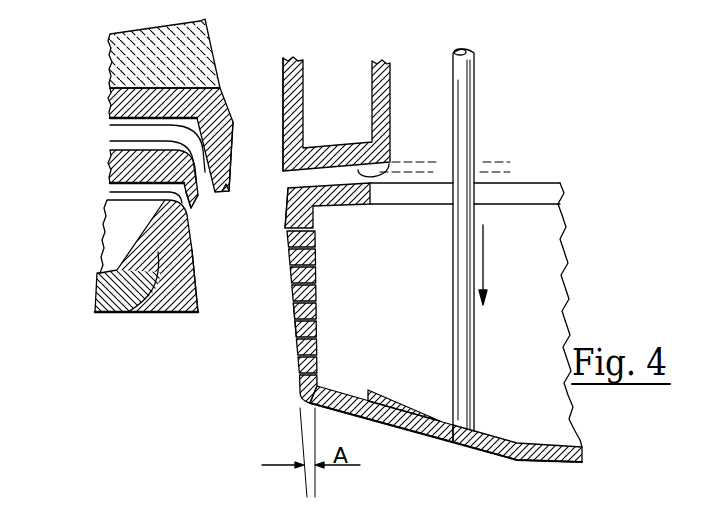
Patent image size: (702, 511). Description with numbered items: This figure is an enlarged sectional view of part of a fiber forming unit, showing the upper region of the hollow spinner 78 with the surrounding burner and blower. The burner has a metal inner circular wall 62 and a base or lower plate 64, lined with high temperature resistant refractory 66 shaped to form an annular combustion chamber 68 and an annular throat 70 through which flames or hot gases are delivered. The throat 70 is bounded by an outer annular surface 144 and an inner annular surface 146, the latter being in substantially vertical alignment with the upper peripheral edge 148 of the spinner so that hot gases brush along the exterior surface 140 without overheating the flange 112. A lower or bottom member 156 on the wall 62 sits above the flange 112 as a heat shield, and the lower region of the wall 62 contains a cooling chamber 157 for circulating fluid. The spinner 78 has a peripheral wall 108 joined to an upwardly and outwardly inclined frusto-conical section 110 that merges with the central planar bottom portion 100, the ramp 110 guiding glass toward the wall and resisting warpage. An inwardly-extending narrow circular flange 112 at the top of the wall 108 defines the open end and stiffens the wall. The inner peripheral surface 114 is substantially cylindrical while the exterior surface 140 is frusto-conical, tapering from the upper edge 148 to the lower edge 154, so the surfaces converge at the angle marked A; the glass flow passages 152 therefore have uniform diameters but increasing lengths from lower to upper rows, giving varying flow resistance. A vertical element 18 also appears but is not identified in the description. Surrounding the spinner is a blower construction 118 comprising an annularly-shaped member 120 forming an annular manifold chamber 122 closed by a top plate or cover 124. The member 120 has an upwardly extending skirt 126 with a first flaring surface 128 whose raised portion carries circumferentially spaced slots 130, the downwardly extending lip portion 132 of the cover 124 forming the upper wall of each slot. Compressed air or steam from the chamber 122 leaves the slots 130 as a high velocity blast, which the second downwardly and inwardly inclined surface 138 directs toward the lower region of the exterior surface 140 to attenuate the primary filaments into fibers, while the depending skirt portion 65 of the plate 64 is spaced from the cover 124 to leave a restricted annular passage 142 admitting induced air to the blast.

The tube 18 is at (475, 105).
The inner circular wall 62 is at (391, 87).
The base or lower plate 64 is at (120, 97).
The depending skirt portion 65 is at (221, 193).
The high temperature resistant refractory 66 is at (130, 45).
The annular confined combustion zone or chamber 68 is at (255, 76).
The annular throat or discharge passage 70 is at (265, 172).
The hollow spinner, rotor or centrifuge 78 is at (446, 442).
The central planar bottom portion 100 is at (561, 443).
The peripheral wall 108 is at (297, 329).
The frusto-conical inclined section or annular ramp portion 110 is at (353, 395).
The inwardly-extending narrow circular flange 112 is at (357, 206).
The inner peripheral surface 114 is at (322, 308).
The blower construction 118 is at (93, 277).
The annularly-shaped member 120 is at (99, 295).
The annular manifold or chamber 122 is at (136, 229).
The top plate or cover 124 is at (115, 167).
The upwardly extending circular wall or skirt portion 126 is at (127, 313).
The first upwardly and outwardly flaring frusto-conical surface 128 is at (196, 210).
The circumferentially spaced slots or orifices 130 is at (110, 192).
The downwardly extending circular lip portion 132 is at (110, 141).
The second downwardly and inwardly inclined frusto-conical surface 138 is at (200, 295).
The exterior peripheral surface 140 is at (289, 308).
The restricted annular passage 142 is at (115, 124).
The outer annular surface 144 is at (233, 148).
The inner annular surface 146 is at (279, 88).
The upper peripheral edge 148 is at (288, 190).
The flow passages 152 is at (292, 253).
The lower edge 154 is at (301, 397).
The lower or bottom member 156 is at (387, 167).
The cooling chamber 157 is at (349, 100).